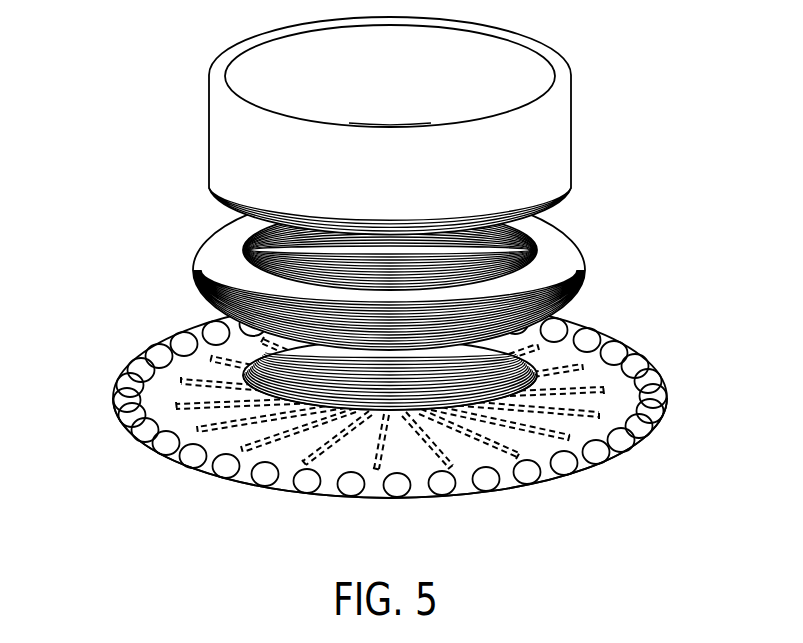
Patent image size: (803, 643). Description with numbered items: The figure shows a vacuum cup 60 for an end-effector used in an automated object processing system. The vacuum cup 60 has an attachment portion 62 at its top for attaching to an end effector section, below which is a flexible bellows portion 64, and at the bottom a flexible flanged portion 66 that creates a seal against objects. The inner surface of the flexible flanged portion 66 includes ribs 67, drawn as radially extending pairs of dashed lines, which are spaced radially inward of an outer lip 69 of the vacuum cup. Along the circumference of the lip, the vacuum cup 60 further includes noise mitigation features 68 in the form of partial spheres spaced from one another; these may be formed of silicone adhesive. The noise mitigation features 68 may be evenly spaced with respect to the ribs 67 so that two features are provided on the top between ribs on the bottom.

The vacuum cup 60 is at (103, 71).
The attachment portion 62 is at (568, 80).
The flexible bellows portion 64 is at (587, 267).
The flexible flanged portion 66 is at (607, 370).
The ribs 67 is at (376, 472).
The noise mitigation features 68 is at (118, 404).
The outer lip 69 is at (615, 462).